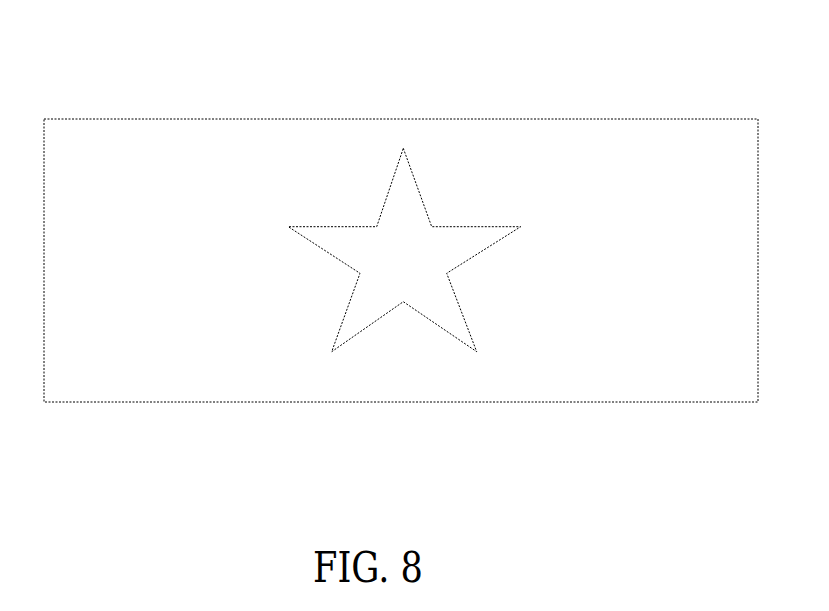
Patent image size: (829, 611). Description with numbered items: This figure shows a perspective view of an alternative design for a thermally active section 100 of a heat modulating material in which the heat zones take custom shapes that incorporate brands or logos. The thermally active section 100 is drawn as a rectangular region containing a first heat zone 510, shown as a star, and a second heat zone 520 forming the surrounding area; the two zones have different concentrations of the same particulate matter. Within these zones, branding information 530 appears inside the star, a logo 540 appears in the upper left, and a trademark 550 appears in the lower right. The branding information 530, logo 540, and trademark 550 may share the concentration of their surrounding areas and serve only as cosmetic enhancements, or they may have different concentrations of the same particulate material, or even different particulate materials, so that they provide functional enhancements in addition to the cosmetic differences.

The thermally active section 100 is at (407, 251).
The first heat zone 510 is at (421, 192).
The second heat zone 520 is at (401, 304).
The branding information 530 is at (481, 173).
The logo 540 is at (176, 114).
The trademark 550 is at (685, 393).